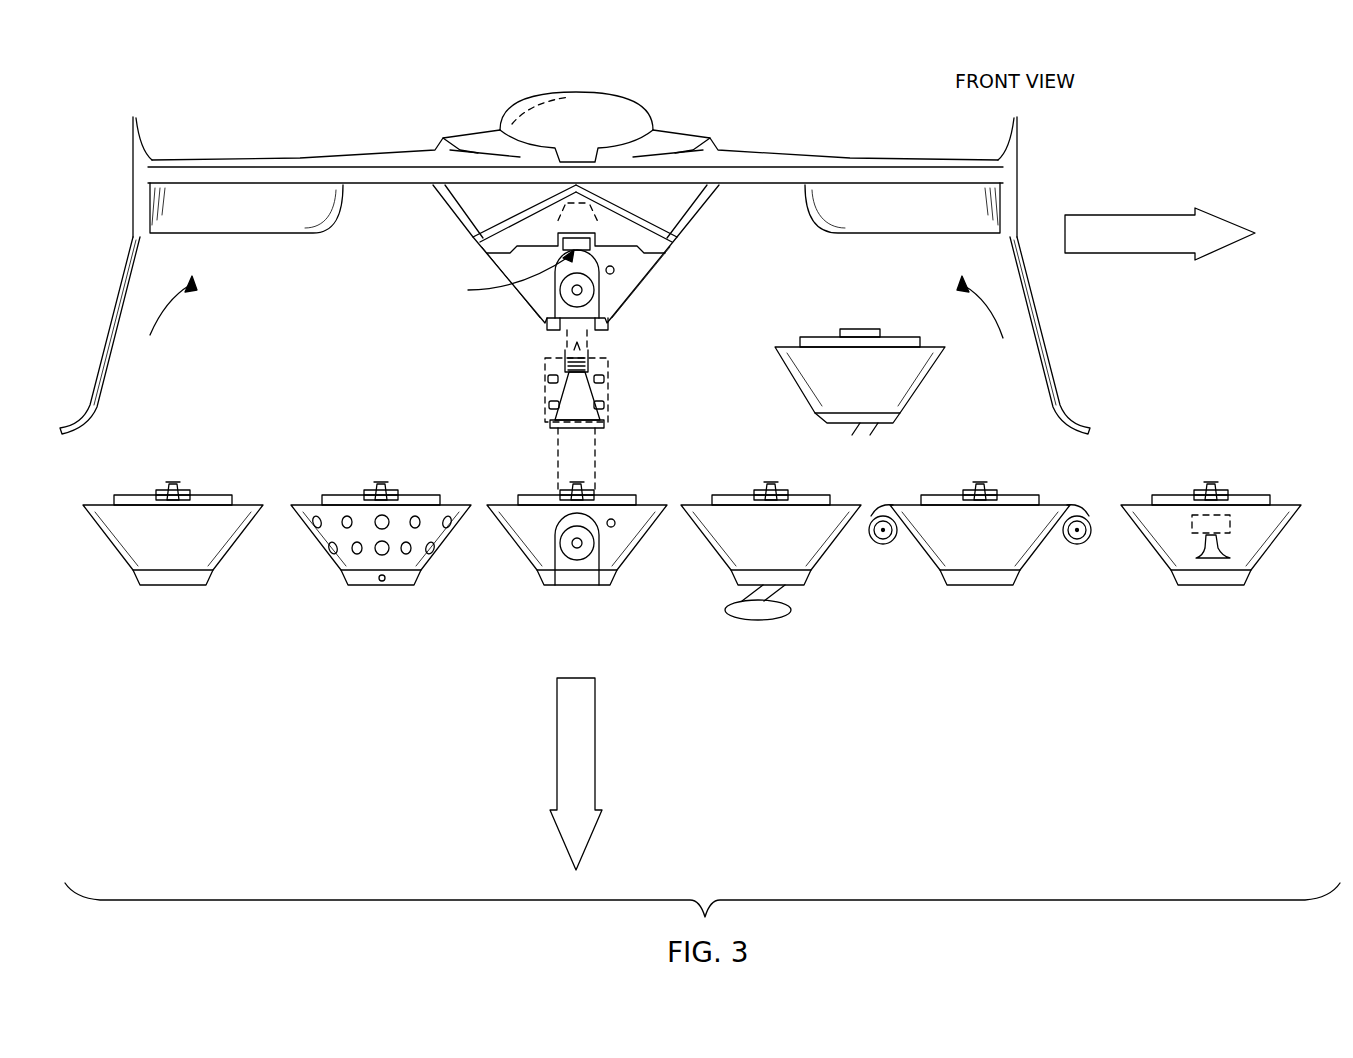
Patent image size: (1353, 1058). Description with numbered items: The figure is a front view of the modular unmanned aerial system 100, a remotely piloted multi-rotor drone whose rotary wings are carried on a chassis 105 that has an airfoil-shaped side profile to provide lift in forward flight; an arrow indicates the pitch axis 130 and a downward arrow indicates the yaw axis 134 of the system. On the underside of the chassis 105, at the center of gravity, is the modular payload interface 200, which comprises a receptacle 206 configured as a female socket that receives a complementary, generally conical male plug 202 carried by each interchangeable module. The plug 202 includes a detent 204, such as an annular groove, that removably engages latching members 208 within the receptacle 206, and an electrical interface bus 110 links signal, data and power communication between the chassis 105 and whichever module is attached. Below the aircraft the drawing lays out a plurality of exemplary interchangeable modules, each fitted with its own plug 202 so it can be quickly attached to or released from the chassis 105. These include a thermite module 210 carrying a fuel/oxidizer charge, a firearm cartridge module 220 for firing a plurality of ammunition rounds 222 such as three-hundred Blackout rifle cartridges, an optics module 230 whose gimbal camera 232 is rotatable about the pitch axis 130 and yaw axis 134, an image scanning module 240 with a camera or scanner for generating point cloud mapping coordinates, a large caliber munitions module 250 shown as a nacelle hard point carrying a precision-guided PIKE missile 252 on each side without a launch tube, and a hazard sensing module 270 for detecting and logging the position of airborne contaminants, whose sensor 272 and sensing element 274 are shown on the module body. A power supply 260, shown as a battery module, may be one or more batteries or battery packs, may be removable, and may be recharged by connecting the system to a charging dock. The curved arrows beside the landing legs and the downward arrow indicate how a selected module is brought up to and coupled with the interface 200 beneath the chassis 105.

The modular unmanned aerial system 100 is at (393, 90).
The chassis 105 is at (283, 157).
The electrical interface bus 110 is at (585, 352).
The pitch axis 130 is at (1160, 215).
The yaw axis 134 is at (596, 752).
The modular payload interface 200 is at (618, 350).
The male plug 202 is at (552, 412).
The detent 204 is at (572, 378).
The receptacle 206 is at (592, 213).
The latching members 208 is at (565, 354).
The thermite module 210 is at (240, 538).
The firearm cartridge module 220 is at (448, 538).
The ammunition rounds 222 is at (388, 518).
The optics module 230 is at (645, 538).
The gimbal camera 232 is at (575, 587).
The image scanning module 240 is at (838, 538).
The large caliber munitions module 250 is at (1048, 538).
The PIKE missile 252 is at (1087, 515).
The power supply 260 is at (928, 383).
The hazard sensing module 270 is at (1278, 538).
The sensor 272 is at (1232, 522).
The sensor horn 274 is at (1215, 560).